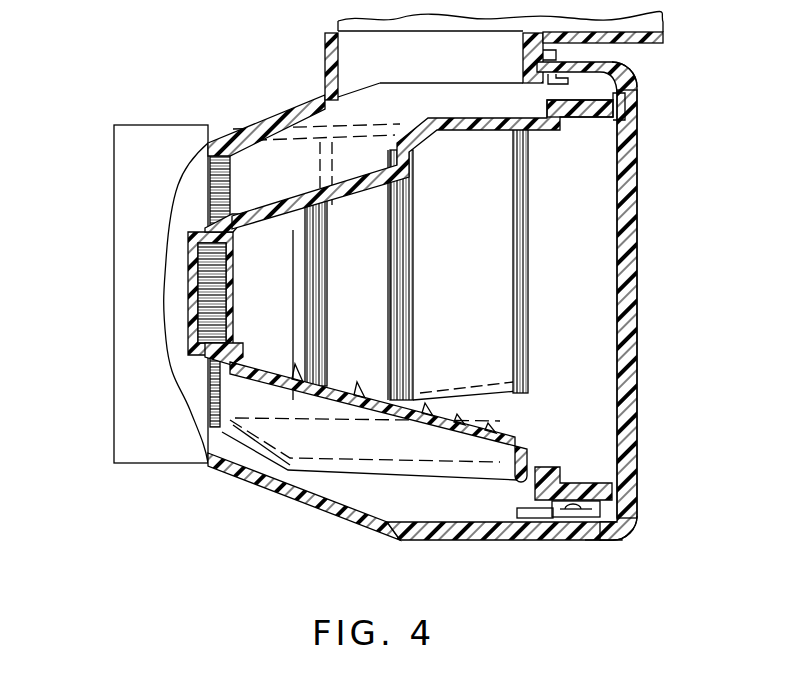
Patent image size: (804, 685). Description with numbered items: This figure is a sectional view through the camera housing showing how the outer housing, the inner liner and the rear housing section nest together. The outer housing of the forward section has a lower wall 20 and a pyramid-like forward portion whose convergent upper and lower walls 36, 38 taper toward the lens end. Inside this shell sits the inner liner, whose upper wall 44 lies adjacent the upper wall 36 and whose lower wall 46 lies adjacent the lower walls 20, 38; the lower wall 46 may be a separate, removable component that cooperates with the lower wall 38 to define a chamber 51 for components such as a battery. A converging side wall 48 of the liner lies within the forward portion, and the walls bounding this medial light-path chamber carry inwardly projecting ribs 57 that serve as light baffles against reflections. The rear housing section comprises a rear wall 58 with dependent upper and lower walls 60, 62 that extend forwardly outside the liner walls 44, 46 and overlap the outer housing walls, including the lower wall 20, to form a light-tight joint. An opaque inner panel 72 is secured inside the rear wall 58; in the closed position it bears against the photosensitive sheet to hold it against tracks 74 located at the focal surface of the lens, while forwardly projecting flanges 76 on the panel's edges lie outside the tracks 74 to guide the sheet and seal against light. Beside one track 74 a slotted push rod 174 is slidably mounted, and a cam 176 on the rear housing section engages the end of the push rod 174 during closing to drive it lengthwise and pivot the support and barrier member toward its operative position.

The lower wall 20 is at (520, 531).
The upper wall 36 is at (259, 121).
The lower wall 38 is at (313, 502).
The upper wall 44 is at (470, 118).
The lower wall 46 is at (378, 405).
The side wall 48 is at (370, 261).
The chamber 51 is at (390, 485).
The ribs 57 is at (300, 293).
The rear wall 58 is at (630, 255).
The upper wall 60 is at (603, 49).
The lower wall 62 is at (602, 542).
The inner panel 72 is at (627, 192).
The tracks 74 is at (620, 128).
The flanges 76 is at (632, 82).
The push rod 174 is at (590, 540).
The cam 176 is at (531, 510).